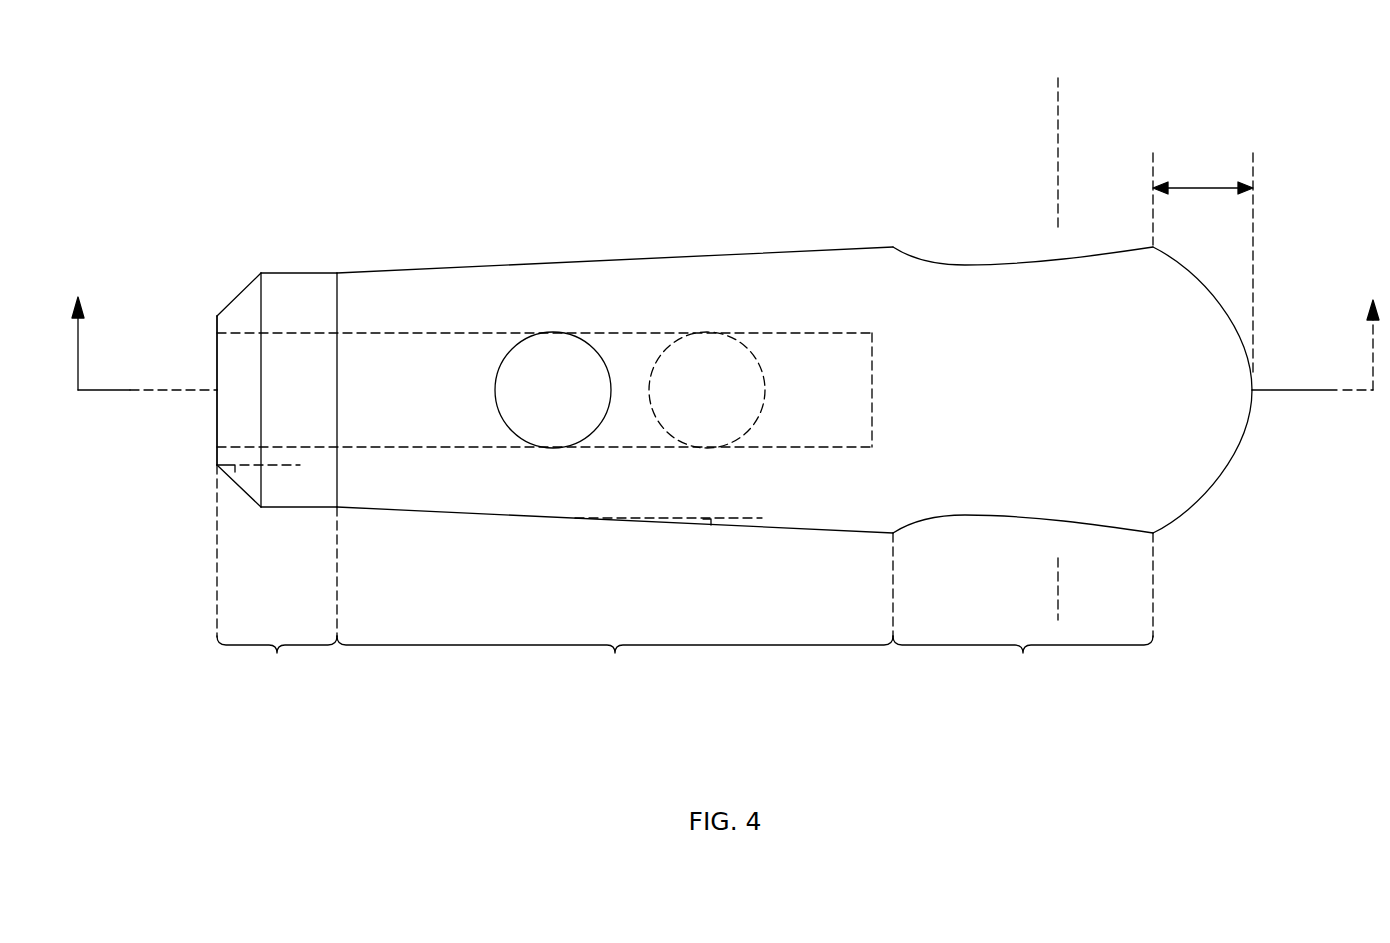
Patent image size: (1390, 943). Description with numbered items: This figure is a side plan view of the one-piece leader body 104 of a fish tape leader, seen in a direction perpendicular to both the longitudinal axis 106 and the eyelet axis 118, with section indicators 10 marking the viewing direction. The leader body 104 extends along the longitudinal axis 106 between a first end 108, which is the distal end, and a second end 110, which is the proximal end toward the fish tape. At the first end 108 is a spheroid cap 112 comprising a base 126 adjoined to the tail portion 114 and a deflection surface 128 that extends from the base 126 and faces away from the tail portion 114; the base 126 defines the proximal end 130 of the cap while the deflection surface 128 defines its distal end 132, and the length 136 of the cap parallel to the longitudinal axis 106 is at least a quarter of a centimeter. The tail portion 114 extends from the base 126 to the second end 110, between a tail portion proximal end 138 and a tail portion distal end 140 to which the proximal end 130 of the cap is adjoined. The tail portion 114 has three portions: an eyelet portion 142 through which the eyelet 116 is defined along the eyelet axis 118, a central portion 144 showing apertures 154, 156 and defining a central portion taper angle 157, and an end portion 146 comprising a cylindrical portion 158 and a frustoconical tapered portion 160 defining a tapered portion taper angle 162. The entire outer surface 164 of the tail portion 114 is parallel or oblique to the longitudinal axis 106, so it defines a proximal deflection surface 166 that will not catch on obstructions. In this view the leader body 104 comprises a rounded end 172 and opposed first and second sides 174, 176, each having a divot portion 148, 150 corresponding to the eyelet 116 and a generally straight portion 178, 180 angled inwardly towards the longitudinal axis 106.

The section line 10 is at (726, 331).
The leader body 104 is at (683, 215).
The longitudinal axis 106 is at (1312, 392).
The first end 108 is at (1253, 392).
The second end 110 is at (217, 425).
The spheroid cap 112 is at (1213, 290).
The tail portion 114 is at (432, 512).
The eyelet 116 is at (948, 517).
The eyelet axis 118 is at (1058, 98).
The base 126 is at (1155, 533).
The deflection surface 128 is at (1235, 453).
The proximal end 130 is at (1155, 533).
The distal end 132 is at (1253, 388).
The length 136 is at (1203, 187).
The tail portion proximal end 138 is at (217, 349).
The tail portion distal end 140 is at (1153, 245).
The eyelet portion 142 is at (1023, 658).
The central portion 144 is at (615, 659).
The end portion 146 is at (277, 659).
The divot portion 148 is at (982, 517).
The divot portion 150 is at (1000, 265).
The aperture 154 is at (533, 402).
The aperture 156 is at (728, 402).
The central portion taper angle 157 is at (712, 525).
The cylindrical portion 158 is at (305, 288).
The tapered portion 160 is at (245, 303).
The tapered portion taper angle 162 is at (236, 472).
The outer surface 164 is at (585, 258).
The proximal deflection surface 166 is at (495, 290).
The rounded end 172 is at (1202, 502).
The first side 174 is at (798, 530).
The second side 176 is at (838, 247).
The straight portion 178 is at (612, 520).
The straight portion 180 is at (632, 258).